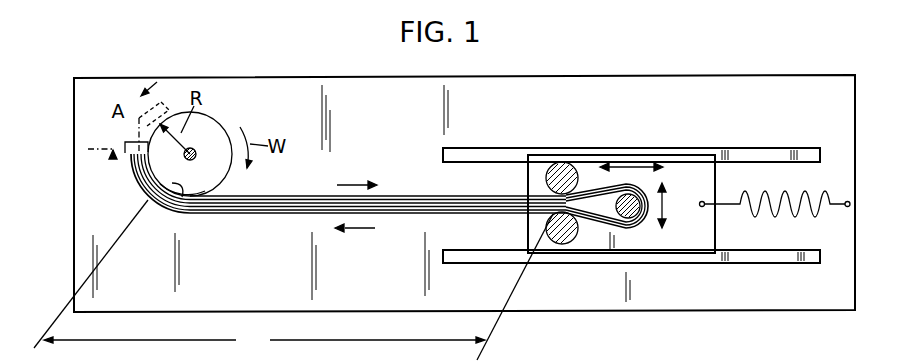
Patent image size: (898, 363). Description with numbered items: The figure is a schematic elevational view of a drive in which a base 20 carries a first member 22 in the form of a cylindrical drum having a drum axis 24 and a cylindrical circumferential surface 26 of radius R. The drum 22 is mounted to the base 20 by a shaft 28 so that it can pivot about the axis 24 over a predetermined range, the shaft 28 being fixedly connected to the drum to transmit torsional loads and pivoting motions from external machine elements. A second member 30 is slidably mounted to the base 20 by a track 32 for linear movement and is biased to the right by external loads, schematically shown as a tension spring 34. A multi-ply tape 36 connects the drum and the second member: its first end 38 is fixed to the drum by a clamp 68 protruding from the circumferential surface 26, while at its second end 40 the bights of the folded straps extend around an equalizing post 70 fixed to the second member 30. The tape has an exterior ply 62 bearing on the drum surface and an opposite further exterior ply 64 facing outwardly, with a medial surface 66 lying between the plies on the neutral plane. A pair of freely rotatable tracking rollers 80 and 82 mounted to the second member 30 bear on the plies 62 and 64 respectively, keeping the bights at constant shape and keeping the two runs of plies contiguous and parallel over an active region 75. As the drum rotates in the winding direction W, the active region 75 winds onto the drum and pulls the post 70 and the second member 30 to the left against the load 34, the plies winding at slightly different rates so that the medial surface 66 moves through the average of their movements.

The base 20 is at (580, 89).
The first member 22 is at (207, 124).
The drum axis 24 is at (196, 150).
The cylindrical circumferential surface 26 is at (163, 122).
The shaft 28 is at (231, 188).
The second member 30 is at (688, 170).
The track 32 is at (767, 141).
The tension spring 34 is at (768, 250).
The multi-ply tape 36 is at (397, 188).
The first end 38 is at (136, 192).
The second end 40 is at (591, 176).
The exterior ply 62 is at (184, 216).
The further exterior ply 64 is at (147, 208).
The medial surface 66 is at (138, 120).
The clamp 68 is at (113, 158).
The equalizing post 70 is at (631, 194).
The active region 75 is at (298, 287).
The tracking roller 80 is at (555, 163).
The tracking roller 82 is at (566, 245).